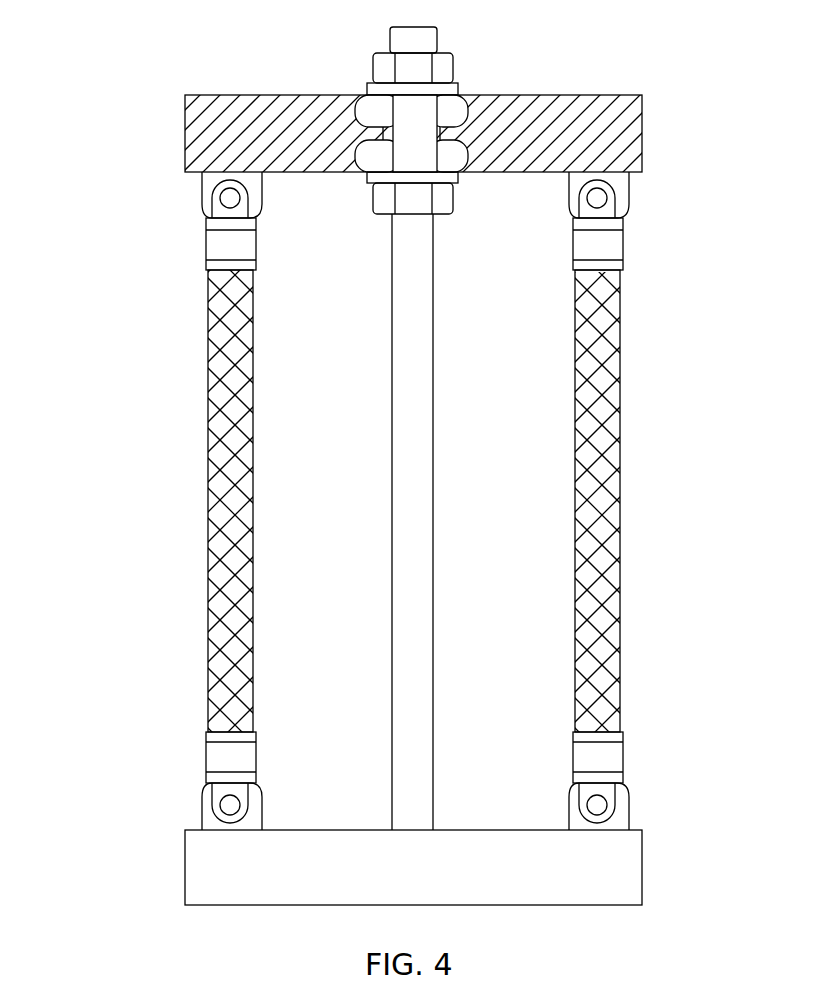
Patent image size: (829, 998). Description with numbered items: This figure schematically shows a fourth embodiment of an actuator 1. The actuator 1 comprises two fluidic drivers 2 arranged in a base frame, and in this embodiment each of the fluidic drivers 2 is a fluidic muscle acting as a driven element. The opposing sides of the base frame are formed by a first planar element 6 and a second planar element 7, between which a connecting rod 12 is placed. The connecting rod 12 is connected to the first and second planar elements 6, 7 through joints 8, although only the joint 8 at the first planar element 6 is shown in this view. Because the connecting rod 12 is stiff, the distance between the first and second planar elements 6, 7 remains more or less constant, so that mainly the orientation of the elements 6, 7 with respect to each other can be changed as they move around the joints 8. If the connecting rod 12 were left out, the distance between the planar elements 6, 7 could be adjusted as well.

The actuator 1 is at (135, 413).
The fluidic driver 2 is at (140, 785).
The first planar element 6 is at (595, 128).
The second planar element 7 is at (623, 873).
The joint 8 is at (417, 135).
The connecting rod 12 is at (420, 762).